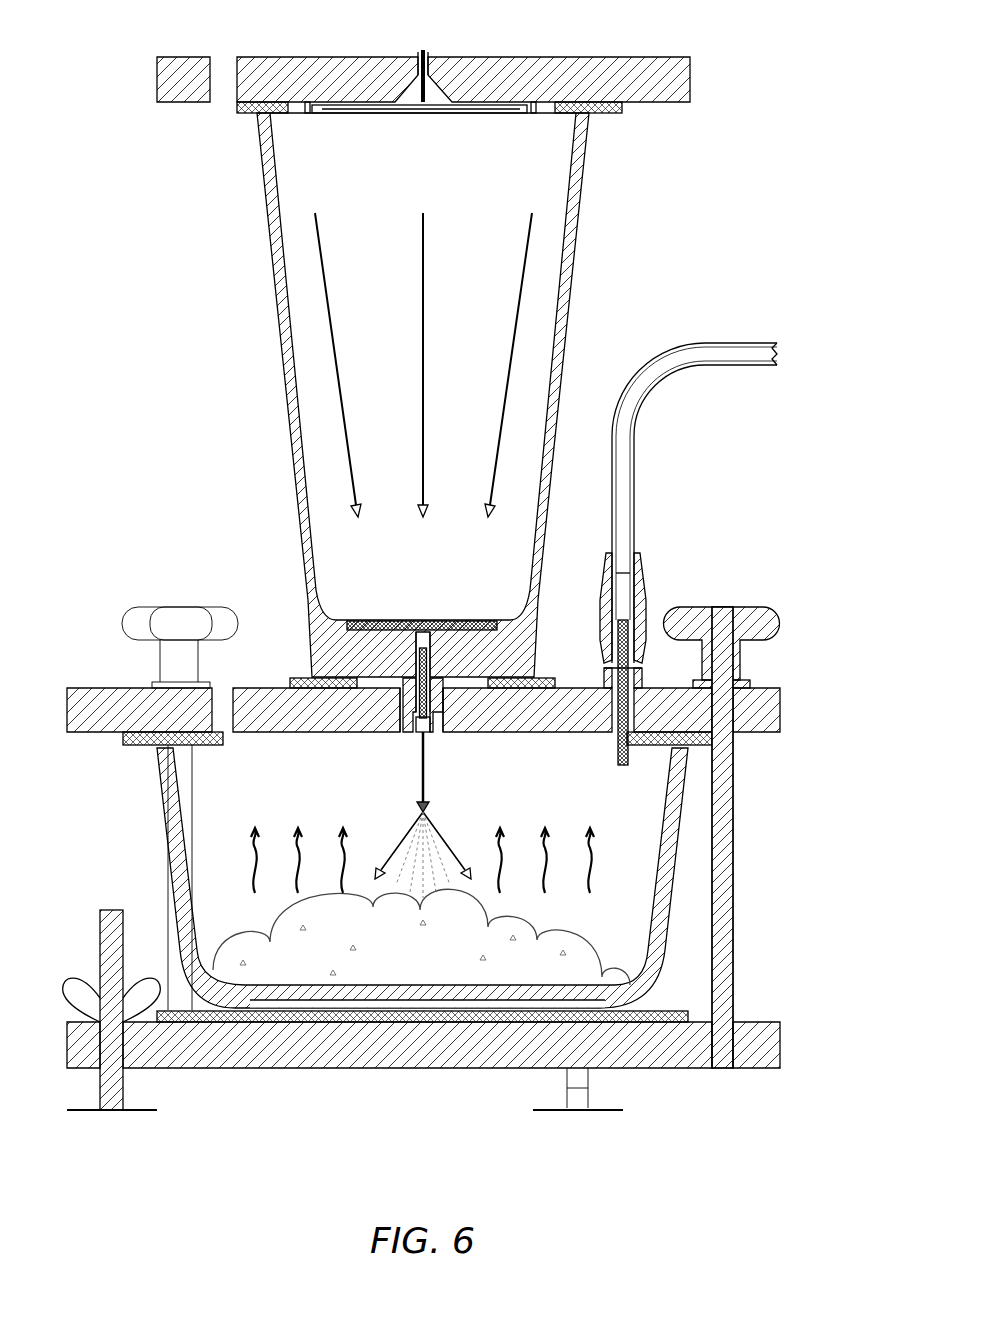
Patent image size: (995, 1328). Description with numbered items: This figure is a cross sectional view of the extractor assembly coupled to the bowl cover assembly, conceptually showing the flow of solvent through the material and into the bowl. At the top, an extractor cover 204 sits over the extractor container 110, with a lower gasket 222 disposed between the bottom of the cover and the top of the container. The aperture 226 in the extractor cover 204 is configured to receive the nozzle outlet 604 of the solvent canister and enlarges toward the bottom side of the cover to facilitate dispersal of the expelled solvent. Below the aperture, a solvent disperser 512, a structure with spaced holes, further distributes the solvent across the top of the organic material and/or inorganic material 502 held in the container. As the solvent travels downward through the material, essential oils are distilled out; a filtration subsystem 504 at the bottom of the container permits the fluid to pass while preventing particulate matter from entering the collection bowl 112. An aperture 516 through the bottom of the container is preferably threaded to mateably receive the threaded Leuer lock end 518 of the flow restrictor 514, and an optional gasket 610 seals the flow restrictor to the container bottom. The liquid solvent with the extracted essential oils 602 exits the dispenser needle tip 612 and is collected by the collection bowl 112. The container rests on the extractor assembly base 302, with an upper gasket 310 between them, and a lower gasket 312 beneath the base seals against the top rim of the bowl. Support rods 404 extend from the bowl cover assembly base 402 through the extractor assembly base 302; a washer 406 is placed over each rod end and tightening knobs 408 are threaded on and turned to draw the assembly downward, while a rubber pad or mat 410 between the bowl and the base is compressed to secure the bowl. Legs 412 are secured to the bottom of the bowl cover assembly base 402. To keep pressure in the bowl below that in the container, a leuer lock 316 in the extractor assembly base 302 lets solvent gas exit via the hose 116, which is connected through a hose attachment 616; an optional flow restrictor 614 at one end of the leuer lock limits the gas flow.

The extractor cover 204 is at (692, 74).
The nozzle outlet 604 is at (419, 24).
The aperture 226 is at (396, 88).
The lower gasket 222 is at (240, 113).
The solvent disperser 512 is at (457, 110).
The extractor container 110 is at (283, 390).
The organic material and/or inorganic material 502 is at (446, 564).
The filtration subsystem 504 is at (343, 597).
The aperture 516 is at (403, 655).
The upper gasket 310 is at (296, 677).
The extractor assembly base 302 is at (782, 712).
The lower gasket 312 is at (204, 745).
The washer 406 is at (157, 683).
The tightening knob 408 is at (152, 607).
The support rod 404 is at (168, 892).
The bowl cover assembly base 402 is at (782, 1046).
The rubber pad or mat 410 is at (677, 1010).
The leg 412 is at (111, 1112).
The collection bowl 112 is at (166, 819).
The flow restrictor 514 is at (390, 719).
The threaded Leuer lock end 518 is at (440, 690).
The gasket 610 is at (440, 678).
The dispenser needle tip 612 is at (419, 788).
The liquid solvent with the extracted essential oils 602 is at (447, 956).
The hose 116 is at (673, 368).
The hose attachment 616 is at (628, 631).
The leuer lock 316 is at (664, 669).
The flow restrictor 614 is at (616, 755).